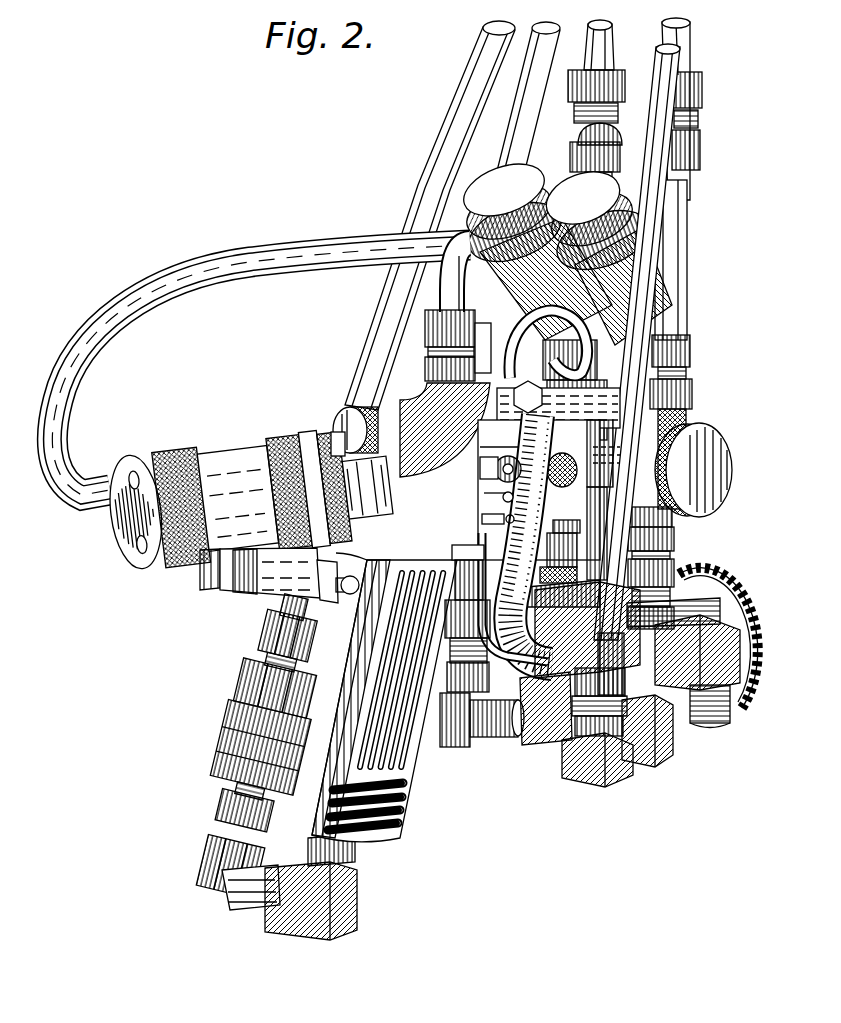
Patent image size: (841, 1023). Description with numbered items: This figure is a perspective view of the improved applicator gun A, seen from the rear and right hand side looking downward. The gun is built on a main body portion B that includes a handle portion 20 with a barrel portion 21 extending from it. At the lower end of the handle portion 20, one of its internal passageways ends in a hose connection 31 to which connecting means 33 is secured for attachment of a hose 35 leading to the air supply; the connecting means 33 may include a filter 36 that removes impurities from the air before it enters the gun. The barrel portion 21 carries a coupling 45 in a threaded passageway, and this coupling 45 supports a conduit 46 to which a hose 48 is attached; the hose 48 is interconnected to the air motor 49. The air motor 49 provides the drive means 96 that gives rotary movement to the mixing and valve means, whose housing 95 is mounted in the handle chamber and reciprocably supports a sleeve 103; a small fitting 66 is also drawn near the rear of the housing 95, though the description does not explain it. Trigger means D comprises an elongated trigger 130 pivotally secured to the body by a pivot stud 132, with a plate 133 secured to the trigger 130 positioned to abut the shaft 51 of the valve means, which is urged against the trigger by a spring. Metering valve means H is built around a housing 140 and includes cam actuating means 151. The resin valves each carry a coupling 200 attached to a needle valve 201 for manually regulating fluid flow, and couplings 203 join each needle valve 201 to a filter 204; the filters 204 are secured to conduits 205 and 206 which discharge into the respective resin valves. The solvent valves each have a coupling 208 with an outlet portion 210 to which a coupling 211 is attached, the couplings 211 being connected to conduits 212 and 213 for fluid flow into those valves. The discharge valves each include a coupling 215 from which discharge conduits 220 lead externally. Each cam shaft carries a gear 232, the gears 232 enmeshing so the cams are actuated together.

The handle portion 20 is at (406, 777).
The barrel portion 21 is at (549, 487).
The hose connection 31 is at (352, 852).
The connecting means 33 is at (248, 910).
The hose 35 is at (472, 88).
The filter 36 is at (238, 598).
The coupling 45 is at (428, 366).
The conduit 46 is at (456, 280).
The hose 48 is at (170, 290).
The air motor 49 is at (242, 438).
The shaft 51 is at (482, 520).
The knurled knob 66 is at (354, 414).
The housing 95 is at (385, 497).
The drive means 96 is at (184, 442).
The sleeve 103 is at (484, 465).
The trigger 130 is at (482, 543).
The pivot stud 132 is at (516, 398).
The plate 133 is at (484, 497).
The housing 140 is at (690, 606).
The cam actuating means 151 is at (764, 582).
The coupling 200 is at (668, 546).
The needle valve 201 is at (714, 444).
The coupling 203 is at (684, 386).
The filter 204 is at (490, 188).
The conduit 205 is at (694, 38).
The conduit 206 is at (606, 36).
The coupling 208 is at (548, 742).
The outlet portion 210 is at (504, 746).
The coupling 211 is at (452, 742).
The conduit 212 is at (672, 200).
The conduit 213 is at (523, 149).
The coupling 215 is at (740, 660).
The discharge conduit 220 is at (490, 664).
The gear 232 is at (762, 614).
The applicator gun A is at (448, 800).
The main body portion B is at (396, 832).
The trigger means D is at (548, 627).
The metering valve means H is at (732, 536).